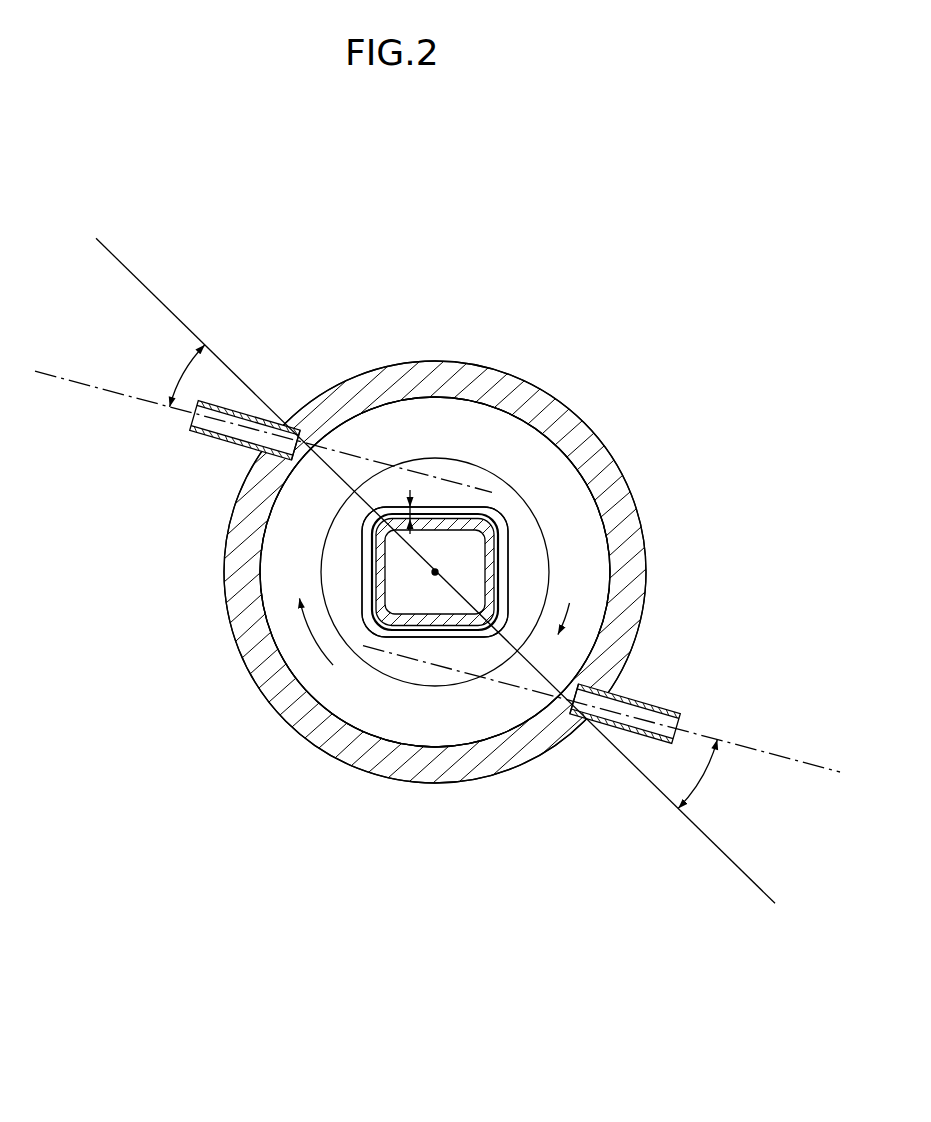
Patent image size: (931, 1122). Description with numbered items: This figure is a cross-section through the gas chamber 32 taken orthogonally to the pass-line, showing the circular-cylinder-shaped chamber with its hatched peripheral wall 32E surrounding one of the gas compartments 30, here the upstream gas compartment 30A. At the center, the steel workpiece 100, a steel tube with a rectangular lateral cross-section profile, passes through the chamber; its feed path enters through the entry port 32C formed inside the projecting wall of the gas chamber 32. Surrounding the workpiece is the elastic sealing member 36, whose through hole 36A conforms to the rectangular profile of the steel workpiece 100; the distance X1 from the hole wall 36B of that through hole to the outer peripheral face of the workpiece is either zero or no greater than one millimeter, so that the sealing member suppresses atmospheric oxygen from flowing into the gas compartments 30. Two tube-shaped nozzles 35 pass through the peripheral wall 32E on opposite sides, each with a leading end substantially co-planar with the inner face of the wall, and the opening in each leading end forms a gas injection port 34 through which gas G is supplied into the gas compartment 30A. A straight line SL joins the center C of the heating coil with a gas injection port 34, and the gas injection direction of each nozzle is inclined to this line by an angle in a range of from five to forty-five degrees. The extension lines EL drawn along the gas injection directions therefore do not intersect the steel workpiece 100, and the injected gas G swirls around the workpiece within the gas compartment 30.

The gas chamber 32 is at (450, 357).
The peripheral wall 32E is at (495, 365).
The entry port 32C is at (435, 455).
The gas compartment 30A is at (530, 452).
The gas compartments 30 is at (435, 572).
The hole wall 36B is at (474, 504).
The through hole 36A is at (435, 572).
The steel workpiece 100 is at (505, 552).
The elastic sealing member 36 is at (500, 573).
The distance X1 is at (373, 513).
The center C is at (433, 574).
The gas G is at (316, 641).
The gas injection port 34 is at (308, 470).
The nozzle 35 is at (203, 437).
The extension line EL is at (86, 388).
The straight line SL is at (744, 871).